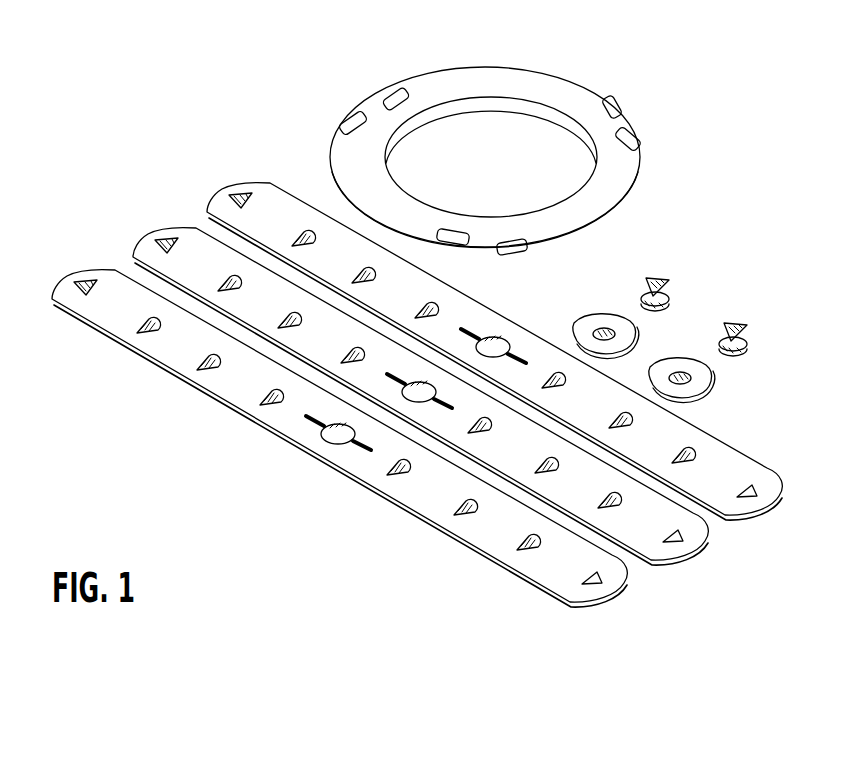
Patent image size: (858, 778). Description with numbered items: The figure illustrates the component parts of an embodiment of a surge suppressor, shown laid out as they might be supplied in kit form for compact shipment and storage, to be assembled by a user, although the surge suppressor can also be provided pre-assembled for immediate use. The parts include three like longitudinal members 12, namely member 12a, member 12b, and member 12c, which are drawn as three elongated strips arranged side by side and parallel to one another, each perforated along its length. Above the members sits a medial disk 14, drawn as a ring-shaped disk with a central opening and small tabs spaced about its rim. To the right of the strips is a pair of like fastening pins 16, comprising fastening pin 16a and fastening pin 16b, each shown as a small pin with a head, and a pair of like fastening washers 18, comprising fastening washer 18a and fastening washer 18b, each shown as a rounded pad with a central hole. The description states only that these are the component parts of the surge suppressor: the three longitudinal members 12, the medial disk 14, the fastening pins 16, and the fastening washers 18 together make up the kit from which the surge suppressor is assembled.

The longitudinal members 12 is at (438, 382).
The member 12a is at (238, 182).
The member 12b is at (168, 225).
The member 12c is at (102, 267).
The medial disk 14 is at (448, 78).
The fastening pins 16 is at (685, 299).
The fastening pin 16a is at (645, 293).
The fastening pin 16b is at (712, 328).
The fastening washers 18 is at (648, 358).
The fastening washer 18a is at (573, 327).
The fastening washer 18b is at (652, 372).